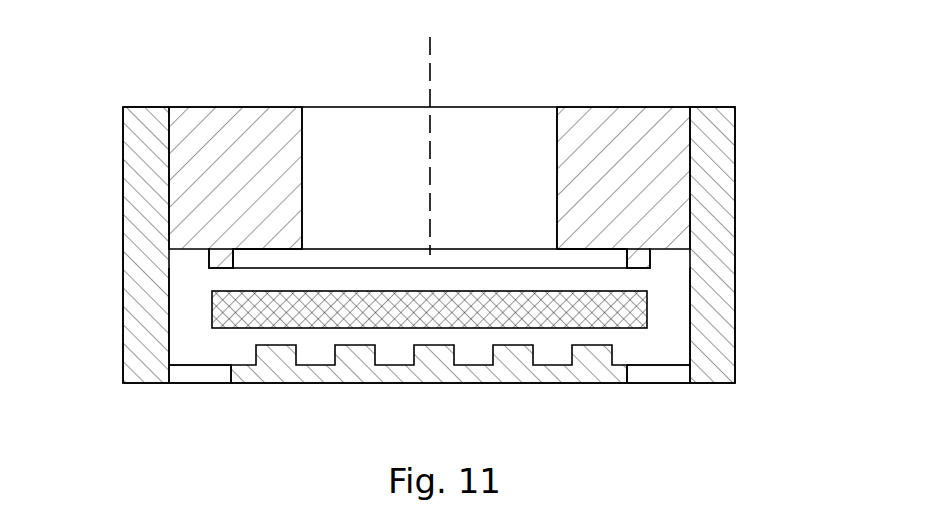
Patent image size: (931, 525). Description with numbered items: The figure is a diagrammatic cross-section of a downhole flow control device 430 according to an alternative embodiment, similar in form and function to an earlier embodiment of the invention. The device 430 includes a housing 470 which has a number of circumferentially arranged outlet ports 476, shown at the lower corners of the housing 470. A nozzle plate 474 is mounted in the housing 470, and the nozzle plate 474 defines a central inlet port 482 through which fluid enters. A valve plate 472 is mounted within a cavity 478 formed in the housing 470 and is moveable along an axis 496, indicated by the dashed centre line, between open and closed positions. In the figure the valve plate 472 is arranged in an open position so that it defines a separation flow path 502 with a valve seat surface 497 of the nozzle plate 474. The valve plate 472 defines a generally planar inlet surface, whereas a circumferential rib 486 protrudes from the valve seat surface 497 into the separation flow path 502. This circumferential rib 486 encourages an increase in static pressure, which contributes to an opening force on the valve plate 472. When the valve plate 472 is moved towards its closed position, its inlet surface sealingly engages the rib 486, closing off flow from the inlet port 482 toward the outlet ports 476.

The flow control device 430 is at (138, 63).
The housing 470 is at (715, 142).
The nozzle plate 474 is at (628, 130).
The inlet port 482 is at (356, 130).
The axis 496 is at (431, 45).
The valve seat surface 497 is at (257, 246).
The circumferential rib 486 is at (222, 258).
The cavity 478 is at (187, 302).
The separation flow path 502 is at (627, 282).
The valve plate 472 is at (441, 318).
The outlet ports 476 is at (203, 372).